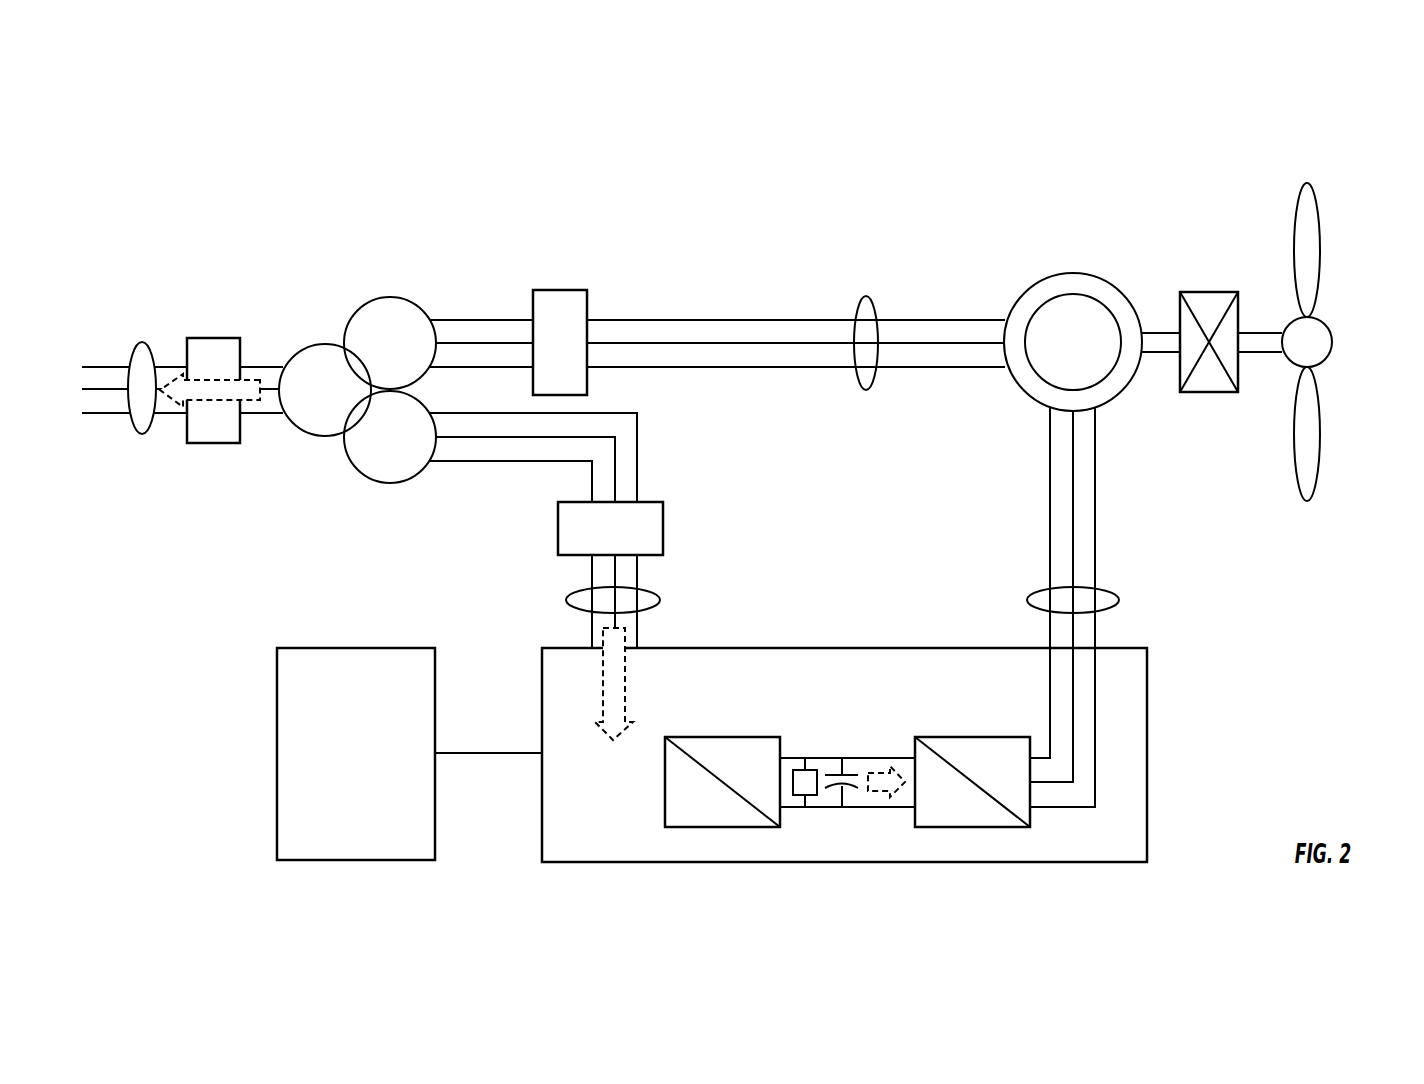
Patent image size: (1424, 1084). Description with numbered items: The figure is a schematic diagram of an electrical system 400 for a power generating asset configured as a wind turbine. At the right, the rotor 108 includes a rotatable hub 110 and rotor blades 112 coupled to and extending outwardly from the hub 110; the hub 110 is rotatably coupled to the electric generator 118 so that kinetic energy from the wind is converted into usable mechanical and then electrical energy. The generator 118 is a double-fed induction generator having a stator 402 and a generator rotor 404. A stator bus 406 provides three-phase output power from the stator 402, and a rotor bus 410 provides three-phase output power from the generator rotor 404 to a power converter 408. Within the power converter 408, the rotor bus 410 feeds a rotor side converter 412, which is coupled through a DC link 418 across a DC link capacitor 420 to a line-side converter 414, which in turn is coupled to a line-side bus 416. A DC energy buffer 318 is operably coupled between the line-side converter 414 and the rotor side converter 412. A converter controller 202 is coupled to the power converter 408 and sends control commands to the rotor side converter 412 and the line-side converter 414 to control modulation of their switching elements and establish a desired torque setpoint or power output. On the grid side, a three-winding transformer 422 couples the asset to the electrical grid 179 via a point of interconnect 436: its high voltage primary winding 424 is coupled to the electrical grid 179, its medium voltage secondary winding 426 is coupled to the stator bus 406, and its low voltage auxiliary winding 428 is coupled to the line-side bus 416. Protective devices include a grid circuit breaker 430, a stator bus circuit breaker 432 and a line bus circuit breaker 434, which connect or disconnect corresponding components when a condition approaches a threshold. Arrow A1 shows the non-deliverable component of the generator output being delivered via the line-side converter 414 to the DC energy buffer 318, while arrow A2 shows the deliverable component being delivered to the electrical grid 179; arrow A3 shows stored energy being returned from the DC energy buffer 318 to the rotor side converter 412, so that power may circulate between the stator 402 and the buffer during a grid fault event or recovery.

The electrical system 400 is at (725, 123).
The transformer 422 is at (357, 368).
The primary winding 424 is at (305, 437).
The secondary winding 426 is at (387, 298).
The auxiliary winding 428 is at (390, 475).
The electrical grid 179 is at (140, 343).
The grid circuit breaker 430 is at (225, 338).
The point of interconnect 436 is at (171, 416).
The arrow A2 is at (253, 405).
The stator bus circuit breaker 432 is at (545, 290).
The stator bus 406 is at (865, 296).
The generator 118 is at (1083, 331).
The stator 402 is at (1125, 292).
The generator rotor 404 is at (1135, 430).
The rotor 108 is at (1276, 354).
The hub 110 is at (1346, 356).
The rotor blade 112 is at (1365, 323).
The line bus circuit breaker 434 is at (705, 500).
The line-side bus 416 is at (700, 577).
The arrow A1 is at (600, 640).
The converter controller 202 is at (280, 728).
The power converter 408 is at (1185, 710).
The line-side converter 414 is at (700, 828).
The DC link 418 is at (844, 738).
The DC energy buffer 318 is at (813, 795).
The DC link capacitor 420 is at (852, 788).
The arrow A3 is at (875, 768).
The rotor side converter 412 is at (985, 828).
The rotor bus 410 is at (1158, 575).